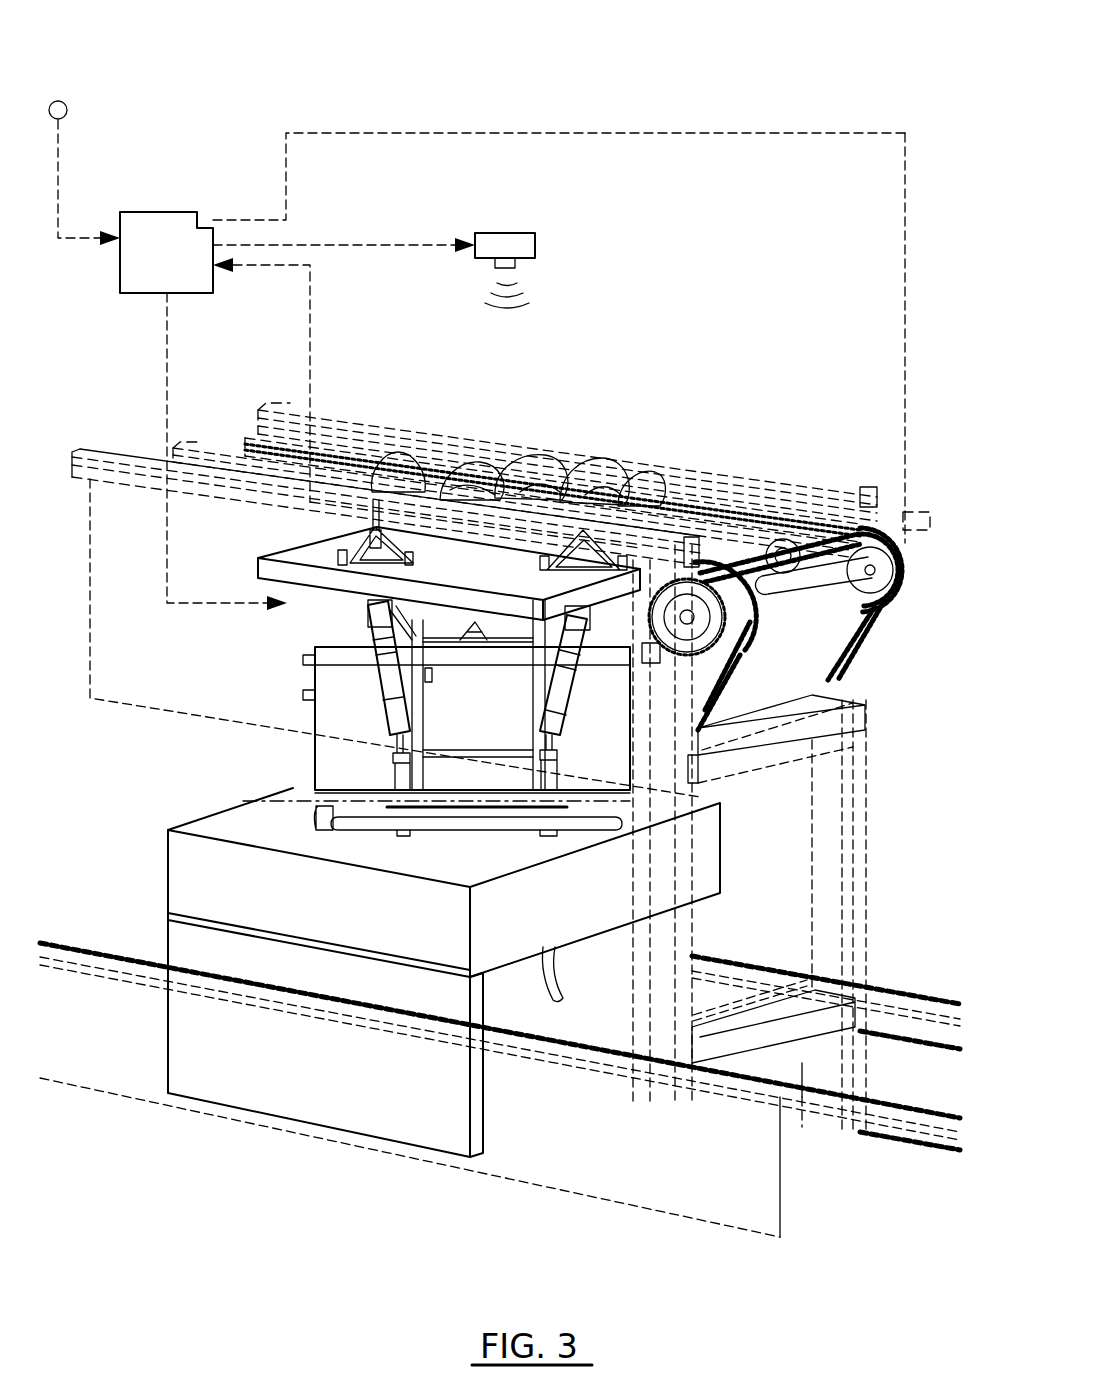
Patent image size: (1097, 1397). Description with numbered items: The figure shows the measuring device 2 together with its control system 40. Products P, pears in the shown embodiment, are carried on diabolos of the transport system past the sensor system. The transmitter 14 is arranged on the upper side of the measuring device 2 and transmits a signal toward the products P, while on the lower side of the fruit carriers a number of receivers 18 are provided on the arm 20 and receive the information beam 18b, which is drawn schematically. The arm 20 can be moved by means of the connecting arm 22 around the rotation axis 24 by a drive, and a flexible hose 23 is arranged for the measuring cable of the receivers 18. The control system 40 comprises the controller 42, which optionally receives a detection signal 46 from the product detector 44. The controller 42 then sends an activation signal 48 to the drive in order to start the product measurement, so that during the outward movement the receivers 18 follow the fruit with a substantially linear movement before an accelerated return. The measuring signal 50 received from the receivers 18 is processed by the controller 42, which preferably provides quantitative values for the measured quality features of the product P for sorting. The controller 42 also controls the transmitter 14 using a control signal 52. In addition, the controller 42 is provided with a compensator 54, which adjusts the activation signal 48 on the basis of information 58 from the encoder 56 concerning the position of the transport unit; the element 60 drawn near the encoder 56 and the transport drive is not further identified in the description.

The measuring device 2 is at (805, 92).
The transmitter 14 is at (492, 240).
The receivers 18 is at (320, 604).
The information beam 18b is at (380, 510).
The arm 20 is at (333, 622).
The connecting arm 22 is at (418, 715).
The flexible hose 23 is at (391, 686).
The rotation axis 24 is at (268, 803).
The control system 40 is at (252, 130).
The controller 42 is at (166, 252).
The product detector 44 is at (67, 110).
The detection signal 46 is at (68, 186).
The activation signal 48 is at (167, 392).
The measuring signal 50 is at (310, 332).
The control signal 52 is at (318, 243).
The compensator 54 is at (204, 212).
The encoder 56 is at (910, 553).
The information 58 is at (903, 255).
The drive sprocket 60 is at (802, 587).
The products P is at (606, 468).